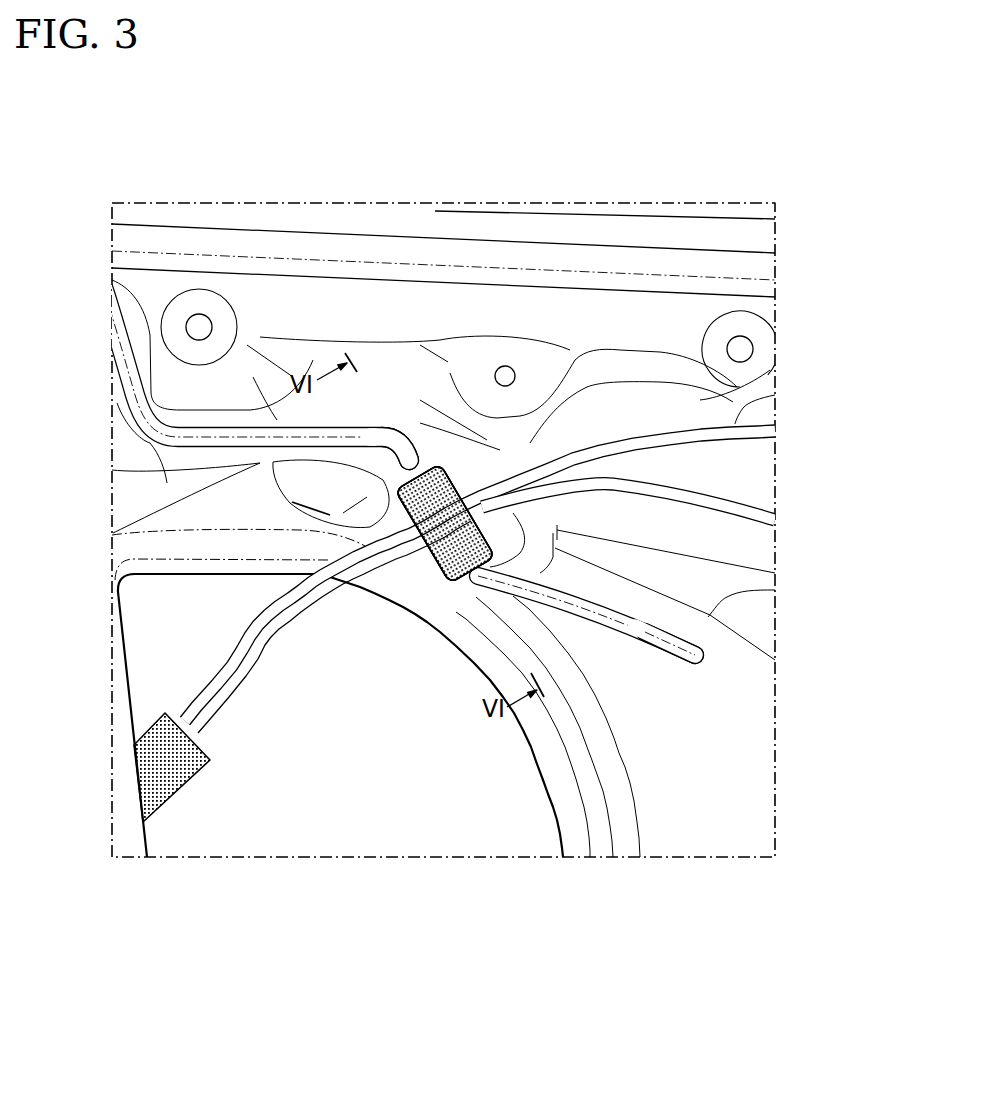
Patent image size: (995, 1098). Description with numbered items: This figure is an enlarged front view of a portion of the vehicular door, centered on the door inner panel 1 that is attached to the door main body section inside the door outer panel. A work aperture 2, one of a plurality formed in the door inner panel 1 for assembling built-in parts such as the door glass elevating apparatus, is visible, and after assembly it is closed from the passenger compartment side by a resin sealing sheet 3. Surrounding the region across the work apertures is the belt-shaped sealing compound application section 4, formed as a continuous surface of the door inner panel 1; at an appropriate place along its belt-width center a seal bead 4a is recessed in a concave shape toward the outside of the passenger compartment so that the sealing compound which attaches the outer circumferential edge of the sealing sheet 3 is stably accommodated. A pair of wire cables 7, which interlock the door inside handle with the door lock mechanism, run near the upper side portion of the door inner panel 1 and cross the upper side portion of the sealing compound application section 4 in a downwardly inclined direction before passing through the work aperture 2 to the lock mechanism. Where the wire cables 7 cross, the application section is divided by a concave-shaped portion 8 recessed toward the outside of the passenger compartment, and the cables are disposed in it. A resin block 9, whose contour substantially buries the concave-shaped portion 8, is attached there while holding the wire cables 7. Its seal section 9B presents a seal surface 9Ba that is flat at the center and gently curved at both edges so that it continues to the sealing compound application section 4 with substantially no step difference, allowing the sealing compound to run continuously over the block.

The door inner panel 1 is at (752, 240).
The work aperture 2 is at (552, 798).
The sealing sheet 3 is at (710, 616).
The sealing compound application section 4 is at (397, 432).
The seal bead 4a is at (372, 441).
The wire cable 7 is at (735, 498).
The concave-shaped portion 8 is at (137, 473).
The resin block 9 is at (463, 483).
The seal surface 9Ba is at (411, 697).
The seal section 9B is at (452, 540).